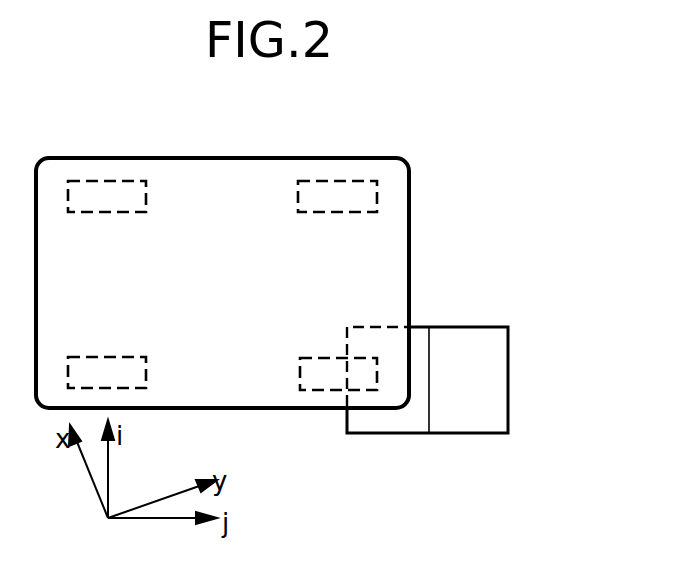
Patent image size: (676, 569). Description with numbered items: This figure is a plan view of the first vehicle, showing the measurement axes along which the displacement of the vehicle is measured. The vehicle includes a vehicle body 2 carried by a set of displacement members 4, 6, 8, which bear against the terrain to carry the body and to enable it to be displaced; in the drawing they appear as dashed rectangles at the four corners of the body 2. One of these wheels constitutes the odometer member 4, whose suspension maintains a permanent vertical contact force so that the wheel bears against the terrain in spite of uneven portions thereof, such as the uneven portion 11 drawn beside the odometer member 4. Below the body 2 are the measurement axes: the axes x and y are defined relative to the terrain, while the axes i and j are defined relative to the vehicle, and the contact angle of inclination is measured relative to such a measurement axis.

The vehicle body 2 is at (409, 230).
The odometer member 4 is at (307, 358).
The displacement member 6 is at (323, 213).
The displacement member 8 is at (126, 356).
The uneven portion of the terrain 11 is at (498, 362).